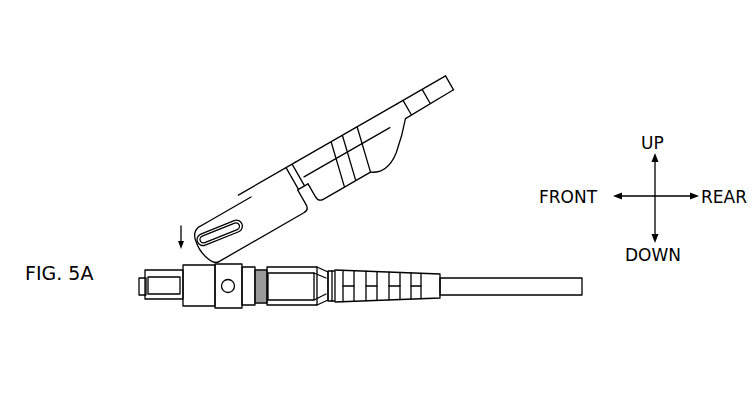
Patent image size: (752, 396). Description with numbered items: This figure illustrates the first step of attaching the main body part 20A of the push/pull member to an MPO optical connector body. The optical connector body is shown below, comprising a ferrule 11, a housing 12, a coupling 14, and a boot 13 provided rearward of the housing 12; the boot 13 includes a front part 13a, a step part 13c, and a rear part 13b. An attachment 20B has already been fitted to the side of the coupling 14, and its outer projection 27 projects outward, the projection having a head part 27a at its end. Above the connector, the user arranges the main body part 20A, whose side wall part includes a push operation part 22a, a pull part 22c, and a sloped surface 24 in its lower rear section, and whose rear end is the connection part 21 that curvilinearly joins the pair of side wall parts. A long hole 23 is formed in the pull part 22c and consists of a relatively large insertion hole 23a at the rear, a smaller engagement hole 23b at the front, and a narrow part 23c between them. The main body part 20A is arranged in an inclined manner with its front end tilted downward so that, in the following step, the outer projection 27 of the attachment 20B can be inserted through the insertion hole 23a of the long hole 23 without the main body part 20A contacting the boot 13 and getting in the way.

The main body part 20A is at (310, 133).
The connection part 21 is at (455, 84).
The push operation part 22a is at (368, 128).
The pull part 22c is at (250, 188).
The long hole 23 is at (177, 190).
The insertion hole 23a is at (233, 223).
The engagement hole 23b is at (210, 228).
The narrow part 23c is at (220, 226).
The sloped surface 24 is at (399, 148).
The attachment 20B is at (220, 309).
The ferrule 11 is at (140, 300).
The housing 12 is at (163, 301).
The coupling 14 is at (193, 307).
The head part 27a is at (269, 333).
The outer projection 27 is at (231, 293).
The boot 13 is at (353, 326).
The front part 13a is at (290, 306).
The rear part 13b is at (387, 312).
The step part 13c is at (323, 306).